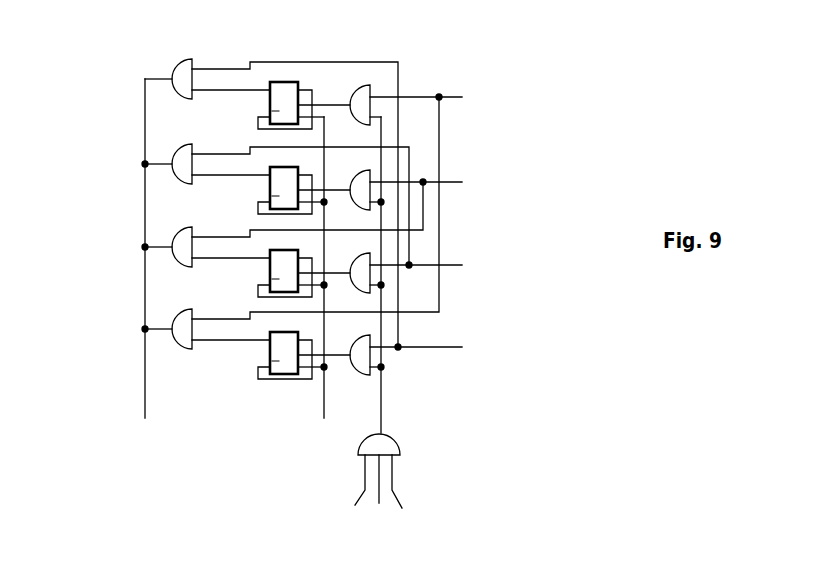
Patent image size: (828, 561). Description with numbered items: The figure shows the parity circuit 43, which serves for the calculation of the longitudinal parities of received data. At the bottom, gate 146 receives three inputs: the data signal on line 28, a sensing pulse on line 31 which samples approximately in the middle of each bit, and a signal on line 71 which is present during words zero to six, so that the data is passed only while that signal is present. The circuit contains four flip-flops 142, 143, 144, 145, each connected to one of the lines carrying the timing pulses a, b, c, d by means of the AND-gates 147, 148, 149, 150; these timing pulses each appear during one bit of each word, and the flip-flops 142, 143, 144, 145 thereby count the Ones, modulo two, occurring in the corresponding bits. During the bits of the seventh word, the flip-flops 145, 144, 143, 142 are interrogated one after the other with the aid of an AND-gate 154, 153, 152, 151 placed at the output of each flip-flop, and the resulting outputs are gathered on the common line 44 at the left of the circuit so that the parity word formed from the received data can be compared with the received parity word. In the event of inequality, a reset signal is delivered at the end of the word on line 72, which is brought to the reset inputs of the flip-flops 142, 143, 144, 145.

The parity circuit 43 is at (88, 238).
The input line 44 is at (138, 264).
The line 72 is at (320, 283).
The flip-flop 142 is at (304, 95).
The flip-flop 143 is at (304, 180).
The flip-flop 144 is at (304, 263).
The flip-flop 145 is at (304, 345).
The gate 146 is at (393, 443).
The AND-gate 147 is at (418, 94).
The AND-gate 148 is at (418, 179).
The AND-gate 149 is at (417, 262).
The AND-gate 150 is at (418, 345).
The AND-gate 151 is at (273, 193).
The AND-gate 152 is at (278, 194).
The AND-gate 153 is at (284, 224).
The AND-gate 154 is at (292, 223).
The line 71 is at (352, 505).
The line 28 is at (371, 494).
The line 31 is at (402, 494).